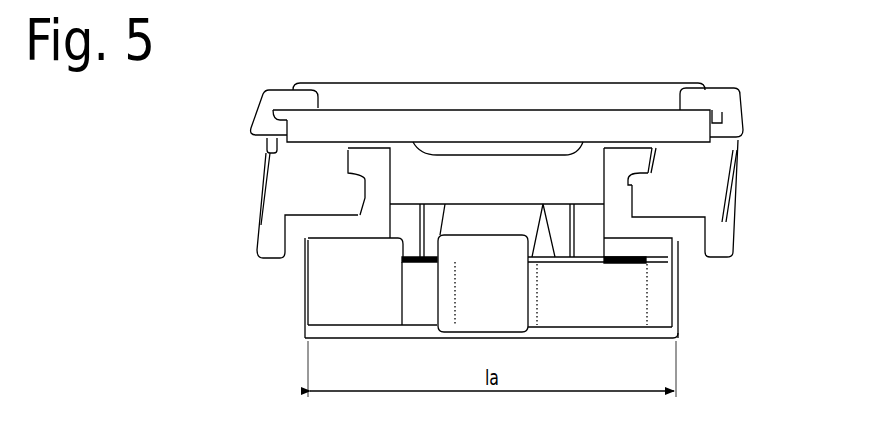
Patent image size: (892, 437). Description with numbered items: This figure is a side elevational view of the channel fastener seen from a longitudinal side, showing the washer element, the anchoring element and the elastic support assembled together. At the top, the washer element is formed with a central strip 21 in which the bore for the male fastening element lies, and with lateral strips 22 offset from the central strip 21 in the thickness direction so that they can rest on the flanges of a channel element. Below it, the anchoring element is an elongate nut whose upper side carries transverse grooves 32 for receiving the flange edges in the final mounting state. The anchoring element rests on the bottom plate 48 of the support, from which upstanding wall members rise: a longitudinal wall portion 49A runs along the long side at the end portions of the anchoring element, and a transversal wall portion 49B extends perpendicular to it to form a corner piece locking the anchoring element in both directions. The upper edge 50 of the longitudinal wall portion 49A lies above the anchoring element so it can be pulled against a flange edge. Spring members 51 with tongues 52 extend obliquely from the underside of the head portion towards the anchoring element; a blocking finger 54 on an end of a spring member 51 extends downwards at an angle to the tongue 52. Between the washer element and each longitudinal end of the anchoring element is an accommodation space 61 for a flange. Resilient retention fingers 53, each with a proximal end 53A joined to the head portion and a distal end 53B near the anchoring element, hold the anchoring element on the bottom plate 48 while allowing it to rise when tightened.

The central strip 21 is at (525, 88).
The lateral strips 22 is at (585, 130).
The grooves 32 is at (600, 248).
The bottom plate 48 is at (575, 333).
The longitudinal wall portion 49A is at (348, 288).
The transversal wall portion 49B is at (675, 252).
The upper edge 50 is at (337, 232).
The spring members 51 is at (255, 227).
The tongues 52 is at (300, 168).
The retention fingers 53 is at (407, 233).
The proximal end 53A is at (402, 207).
The distal end 53B is at (433, 265).
The blocking finger 54 is at (271, 245).
The accommodation space 61 is at (382, 218).